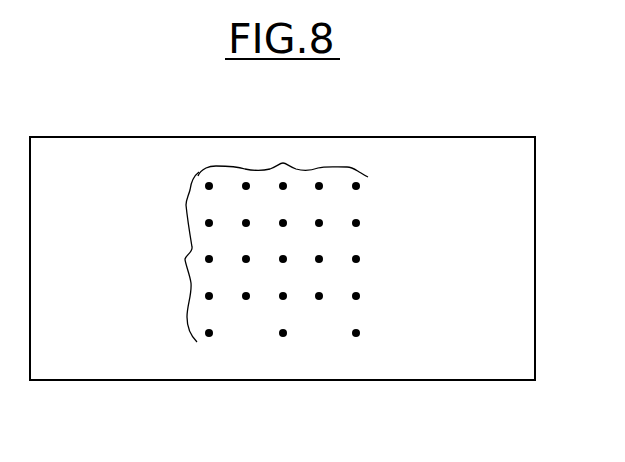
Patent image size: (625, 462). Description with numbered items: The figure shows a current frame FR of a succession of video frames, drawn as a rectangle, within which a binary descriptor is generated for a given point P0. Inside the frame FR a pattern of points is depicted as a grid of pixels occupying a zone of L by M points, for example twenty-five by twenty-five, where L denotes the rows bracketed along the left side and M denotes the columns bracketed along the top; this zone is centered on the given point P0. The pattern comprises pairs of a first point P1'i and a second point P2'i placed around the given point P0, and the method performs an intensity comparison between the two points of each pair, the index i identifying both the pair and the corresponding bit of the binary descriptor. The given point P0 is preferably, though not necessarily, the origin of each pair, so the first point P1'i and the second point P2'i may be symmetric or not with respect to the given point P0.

The current frame FR is at (535, 259).
The number of columns of the point zone M is at (283, 158).
The number of rows of the point zone L is at (183, 257).
The given point P0 is at (283, 259).
The first point of point pair P1'i is at (226, 341).
The second point of point pair P2'i is at (338, 341).